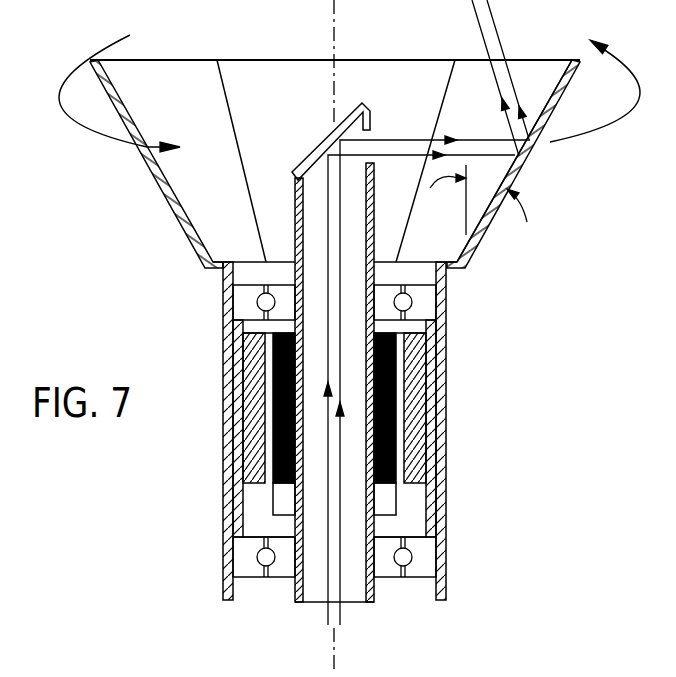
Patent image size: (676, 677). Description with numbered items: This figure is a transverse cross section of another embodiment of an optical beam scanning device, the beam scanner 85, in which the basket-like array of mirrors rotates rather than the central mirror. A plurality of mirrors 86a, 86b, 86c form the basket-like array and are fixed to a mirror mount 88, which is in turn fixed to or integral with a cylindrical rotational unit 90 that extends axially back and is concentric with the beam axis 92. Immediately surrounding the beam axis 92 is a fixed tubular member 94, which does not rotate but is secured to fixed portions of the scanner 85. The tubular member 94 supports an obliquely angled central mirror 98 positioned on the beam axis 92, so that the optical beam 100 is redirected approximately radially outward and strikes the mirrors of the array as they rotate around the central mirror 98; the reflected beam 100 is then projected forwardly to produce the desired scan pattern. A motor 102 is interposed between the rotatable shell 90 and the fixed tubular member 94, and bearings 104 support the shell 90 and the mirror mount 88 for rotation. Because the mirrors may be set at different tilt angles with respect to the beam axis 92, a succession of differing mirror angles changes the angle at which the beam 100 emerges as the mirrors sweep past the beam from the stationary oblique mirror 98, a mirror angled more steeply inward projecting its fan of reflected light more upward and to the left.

The beam scanner 85 is at (171, 288).
The mirror 86a is at (176, 83).
The mirror 86b is at (277, 77).
The mirror 86c is at (548, 72).
The mirror mount 88 is at (480, 237).
The cylindrical rotational unit 90 is at (447, 396).
The beam axis 92 is at (337, 31).
The fixed tubular member 94 is at (295, 213).
The central mirror 98 is at (308, 160).
The optical beam 100 is at (343, 207).
The motor 102 is at (428, 440).
The bearings 104 is at (430, 302).